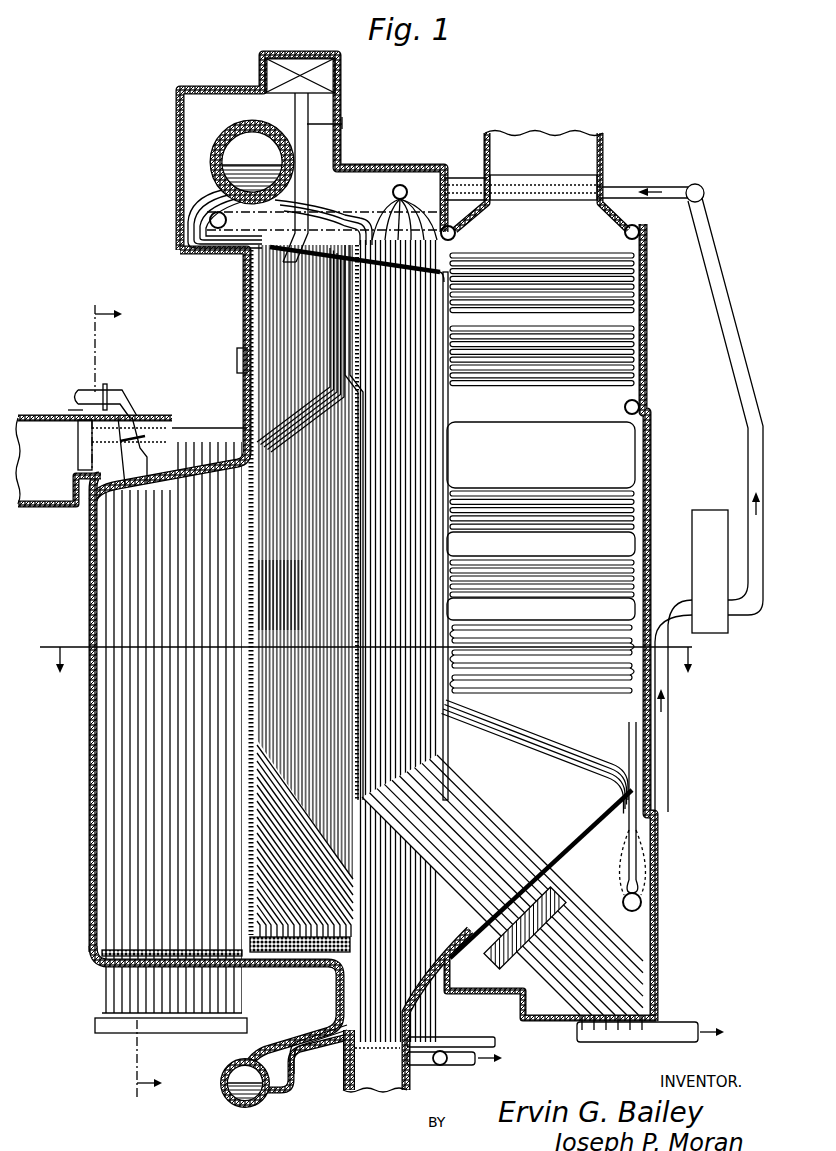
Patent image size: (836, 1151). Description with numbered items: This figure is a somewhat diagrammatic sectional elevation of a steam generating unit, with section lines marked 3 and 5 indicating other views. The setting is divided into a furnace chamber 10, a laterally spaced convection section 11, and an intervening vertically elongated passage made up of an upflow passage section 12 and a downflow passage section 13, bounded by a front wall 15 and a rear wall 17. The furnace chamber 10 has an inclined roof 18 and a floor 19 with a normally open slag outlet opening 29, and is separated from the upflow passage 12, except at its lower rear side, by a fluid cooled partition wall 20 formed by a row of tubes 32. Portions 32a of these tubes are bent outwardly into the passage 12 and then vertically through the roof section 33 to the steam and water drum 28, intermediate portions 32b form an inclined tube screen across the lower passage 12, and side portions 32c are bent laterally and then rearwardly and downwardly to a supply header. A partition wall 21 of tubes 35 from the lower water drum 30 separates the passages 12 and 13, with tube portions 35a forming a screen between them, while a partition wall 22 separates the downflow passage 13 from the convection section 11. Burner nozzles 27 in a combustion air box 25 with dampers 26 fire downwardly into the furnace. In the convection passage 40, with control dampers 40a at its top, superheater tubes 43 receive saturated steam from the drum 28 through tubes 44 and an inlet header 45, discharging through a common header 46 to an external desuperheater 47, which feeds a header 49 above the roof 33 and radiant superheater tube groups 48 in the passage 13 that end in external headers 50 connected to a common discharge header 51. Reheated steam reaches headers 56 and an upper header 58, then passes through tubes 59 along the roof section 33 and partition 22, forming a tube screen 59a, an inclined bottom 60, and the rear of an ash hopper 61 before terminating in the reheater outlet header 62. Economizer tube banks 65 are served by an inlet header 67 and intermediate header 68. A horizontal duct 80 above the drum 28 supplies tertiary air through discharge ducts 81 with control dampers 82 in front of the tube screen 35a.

The furnace chamber 10 is at (174, 756).
The convection section 11 is at (543, 621).
The upflow passage section 12 is at (314, 627).
The downflow passage section 13 is at (403, 624).
The front wall 15 is at (88, 742).
The rear wall 17 is at (654, 487).
The inclined roof 18 is at (200, 462).
The floor 19 is at (122, 972).
The fluid cooled partition wall 20 is at (248, 567).
The fluid cooled partition wall 21 is at (355, 516).
The fluid cooled partition wall 22 is at (438, 674).
The combustion air box 25 is at (142, 416).
The dampers 26 is at (77, 444).
The pulverized coal burner nozzles 27 is at (145, 450).
The steam and water drum 28 is at (222, 138).
The slag outlet opening 29 is at (180, 956).
The lower water drum 30 is at (236, 1094).
The tubes 32 is at (258, 598).
The tube portions 32a is at (289, 418).
The tube portions 32b is at (303, 810).
The lower tube portions 32c is at (260, 845).
The roof section 33 is at (387, 264).
The tubes 35 is at (397, 1014).
The tube portions 35a is at (349, 333).
The passage 40 is at (548, 467).
The control dampers 40a is at (518, 176).
The superheater tubes 43 is at (582, 636).
The tubes 44 is at (247, 104).
The superheater inlet header 45 is at (455, 236).
The common header 46 is at (643, 903).
The desuperheater 47 is at (718, 635).
The superheater tube groups 48 is at (455, 796).
The inlet header 49 is at (402, 184).
The external header 50 is at (549, 902).
The common discharge header 51 is at (683, 1022).
The headers 56 is at (326, 1054).
The upper header 58 is at (210, 222).
The tubes 59 is at (230, 250).
The tube screen 59a is at (573, 738).
The inclined bottom 60 is at (561, 855).
The hopper 61 is at (386, 1082).
The reheater outlet header 62 is at (458, 1067).
The economizer tube banks 65 is at (552, 283).
The economizer inlet header 67 is at (625, 234).
The intermediate header 68 is at (640, 403).
The horizontal duct 80 is at (297, 62).
The discharge ducts 81 is at (312, 153).
The control dampers 82 is at (309, 121).
The section line 3- 3 is at (366, 672).
The section line 5- 5 is at (136, 702).